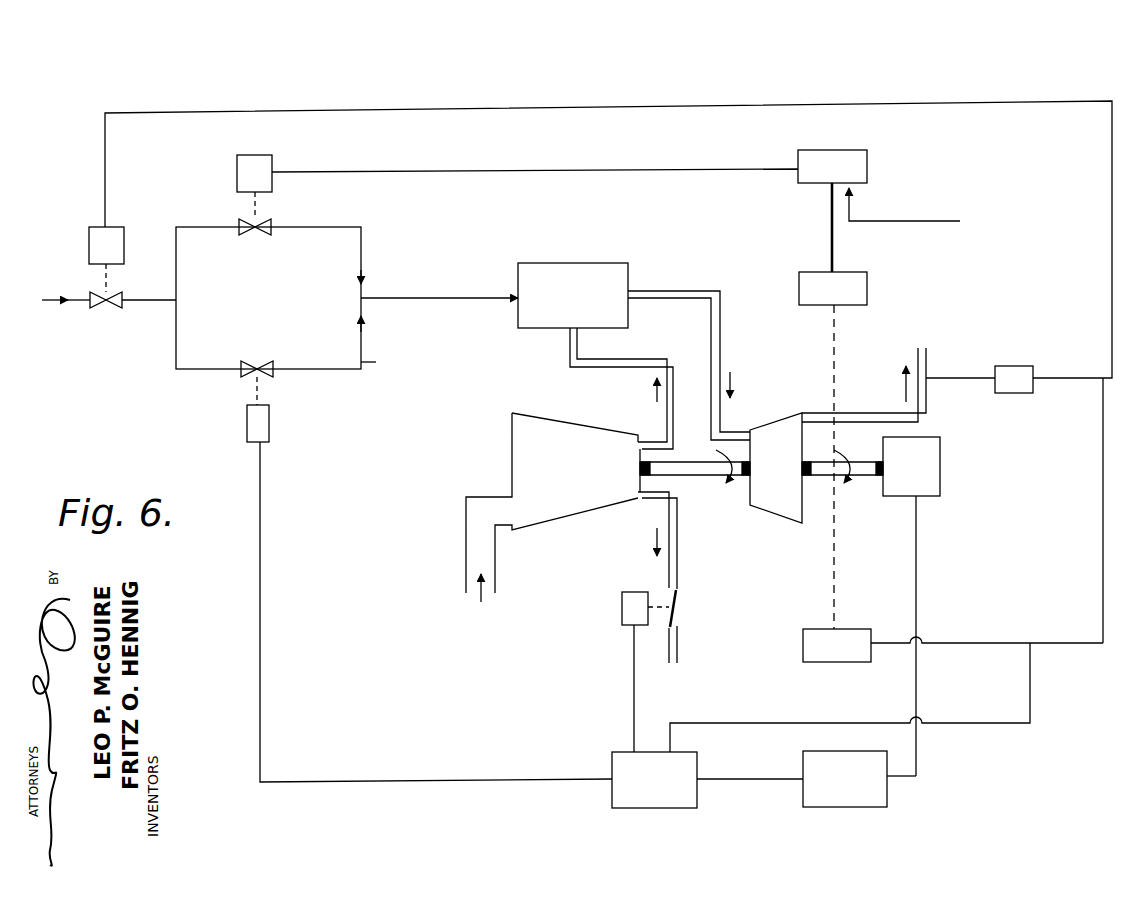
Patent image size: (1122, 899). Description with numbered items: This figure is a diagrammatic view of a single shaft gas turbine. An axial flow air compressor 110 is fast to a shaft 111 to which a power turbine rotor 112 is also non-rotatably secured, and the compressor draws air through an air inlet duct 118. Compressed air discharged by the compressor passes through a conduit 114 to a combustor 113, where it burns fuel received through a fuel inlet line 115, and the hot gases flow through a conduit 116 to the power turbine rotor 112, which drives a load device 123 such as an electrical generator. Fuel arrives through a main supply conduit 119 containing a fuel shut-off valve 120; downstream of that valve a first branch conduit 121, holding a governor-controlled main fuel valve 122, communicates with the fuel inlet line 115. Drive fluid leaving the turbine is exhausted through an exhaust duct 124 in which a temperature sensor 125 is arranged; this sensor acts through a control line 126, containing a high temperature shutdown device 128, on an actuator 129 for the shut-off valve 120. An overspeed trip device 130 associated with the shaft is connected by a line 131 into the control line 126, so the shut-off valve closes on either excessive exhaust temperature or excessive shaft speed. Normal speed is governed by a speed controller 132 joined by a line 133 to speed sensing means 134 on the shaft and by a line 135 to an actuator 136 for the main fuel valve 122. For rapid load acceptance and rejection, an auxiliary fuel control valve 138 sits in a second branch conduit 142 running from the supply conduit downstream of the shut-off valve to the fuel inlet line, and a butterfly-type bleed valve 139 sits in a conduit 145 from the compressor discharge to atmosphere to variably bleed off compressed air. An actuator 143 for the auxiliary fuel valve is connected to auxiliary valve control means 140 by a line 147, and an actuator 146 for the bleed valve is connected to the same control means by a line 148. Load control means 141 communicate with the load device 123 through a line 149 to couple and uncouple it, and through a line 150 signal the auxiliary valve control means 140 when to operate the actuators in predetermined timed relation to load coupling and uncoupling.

The axial flow air compressor 110 is at (564, 423).
The shaft 111 is at (716, 477).
The power turbine rotor 112 is at (778, 421).
The combustor 113 is at (578, 248).
The conduit 114 is at (622, 367).
The fuel inlet line 115 is at (434, 281).
The conduit 116 is at (720, 333).
The air inlet duct 118 is at (466, 512).
The main fuel supply conduit 119 is at (45, 307).
The fuel shut-off valve 120 is at (130, 289).
The first branch conduit 121 is at (336, 227).
The governor-controlled main fuel valve 122 is at (283, 216).
The load device 123 is at (941, 483).
The exhaust duct 124 is at (864, 422).
The temperature sensor 125 is at (926, 381).
The control line 126 is at (1110, 121).
The high temperature shutdown device 128 is at (1013, 366).
The fuel shut-off valve actuator 129 is at (118, 236).
The overspeed trip device 130 is at (852, 629).
The line 131 is at (1082, 642).
The speed controller 132 is at (836, 150).
The line 133 is at (830, 225).
The speed sensing means 134 is at (857, 272).
The line 135 is at (595, 170).
The main fuel valve actuator 136 is at (272, 162).
The auxiliary fuel control valve 138 is at (275, 377).
The bleed valve 139 is at (678, 617).
The auxiliary valve control means 140 is at (612, 762).
The load control means 141 is at (887, 798).
The second branch conduit 142 is at (387, 363).
The auxiliary fuel valve actuator 143 is at (270, 433).
The bleed conduit 145 is at (680, 560).
The bleed valve actuator 146 is at (630, 592).
The control line to auxiliary valve actuator 147 is at (261, 756).
The line 148 is at (634, 691).
The line 149 is at (918, 693).
The line 150 is at (750, 780).